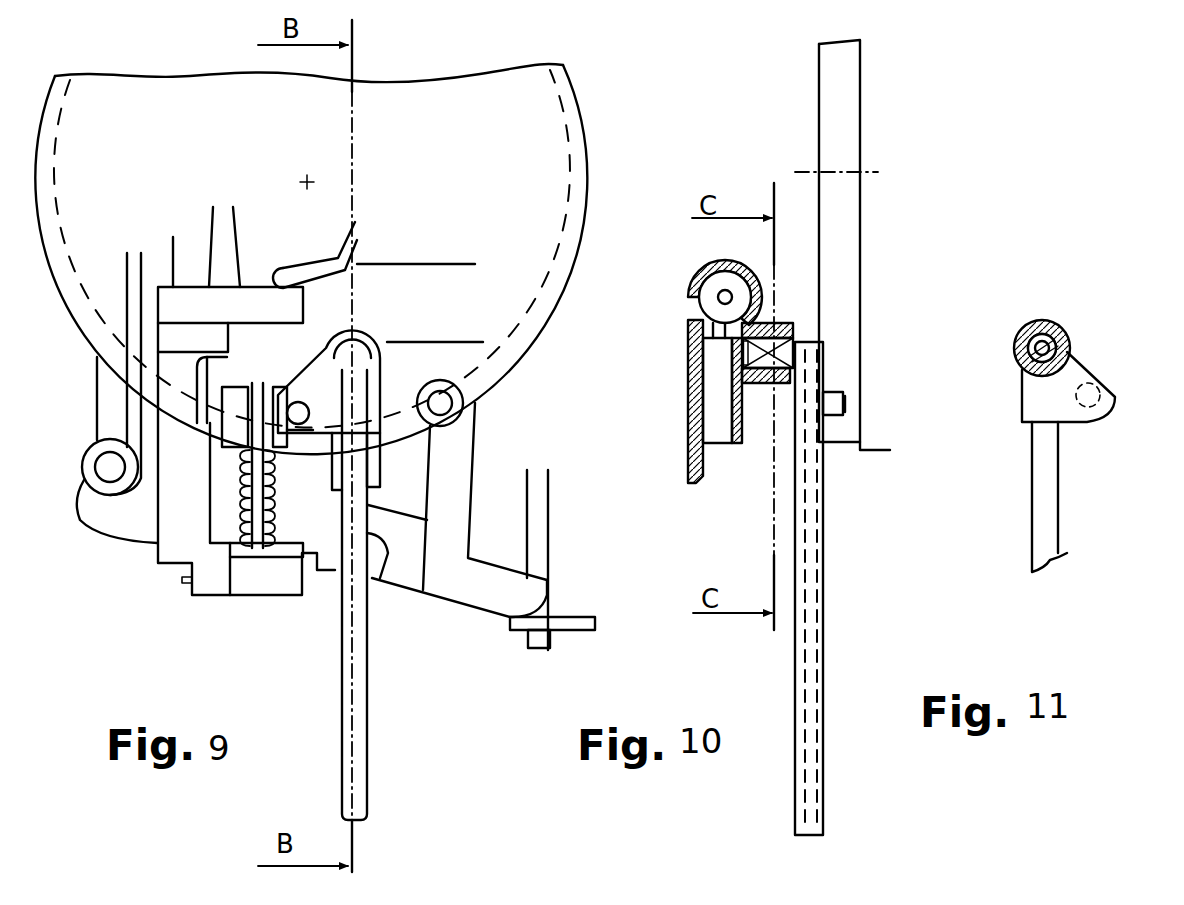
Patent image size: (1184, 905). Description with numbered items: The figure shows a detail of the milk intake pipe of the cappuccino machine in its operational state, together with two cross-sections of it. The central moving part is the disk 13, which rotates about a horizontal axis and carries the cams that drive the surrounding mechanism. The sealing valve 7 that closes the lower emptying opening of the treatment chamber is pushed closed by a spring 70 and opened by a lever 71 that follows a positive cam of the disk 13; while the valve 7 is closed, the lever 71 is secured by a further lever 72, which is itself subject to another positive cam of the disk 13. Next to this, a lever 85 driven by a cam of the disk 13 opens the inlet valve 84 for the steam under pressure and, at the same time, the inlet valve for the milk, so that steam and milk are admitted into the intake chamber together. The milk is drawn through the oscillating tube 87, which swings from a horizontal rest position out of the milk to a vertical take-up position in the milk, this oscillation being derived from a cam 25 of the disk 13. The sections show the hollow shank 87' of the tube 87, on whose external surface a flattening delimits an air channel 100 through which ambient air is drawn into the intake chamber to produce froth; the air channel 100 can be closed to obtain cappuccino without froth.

In FIG. 9, the disk 13 is at (552, 130).
In FIG. 10, the disk 13 is at (855, 118).
In FIG. 9, the further lever 72 is at (360, 252).
In FIG. 9, the lever 71 is at (173, 535).
In FIG. 9, the spring 70 is at (238, 550).
In FIG. 9, the sealing valve 7 is at (262, 548).
In FIG. 9, the oscillating tube 87 is at (352, 575).
In FIG. 10, the oscillating tube 87 is at (839, 588).
In FIG. 11, the oscillating tube 87 is at (1075, 497).
In FIG. 9, the lever 85 is at (413, 580).
In FIG. 9, the inlet valve 84 is at (543, 515).
In FIG. 10, the air channel 100 is at (793, 330).
In FIG. 11, the air channel 100 is at (1068, 338).
In FIG. 10, the cam 25 is at (845, 400).
In FIG. 11, the hollow shank 87' is at (991, 311).